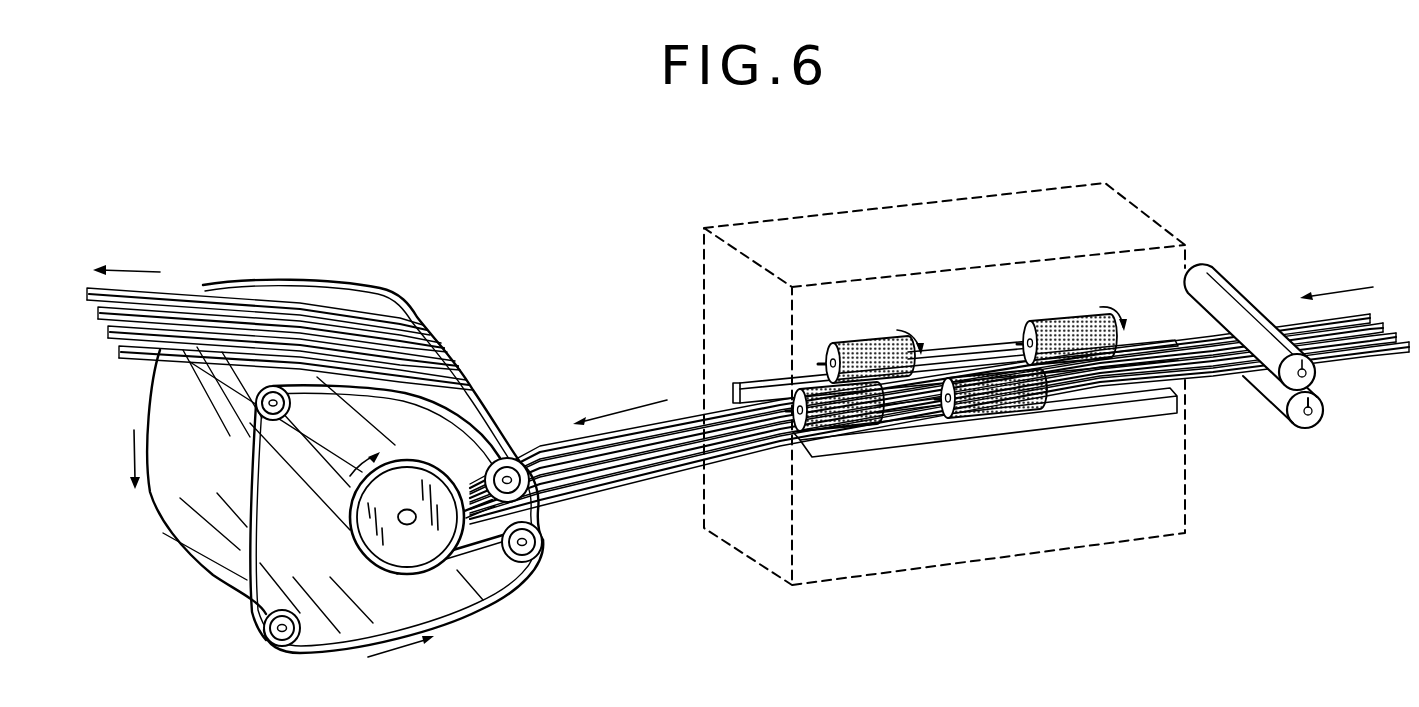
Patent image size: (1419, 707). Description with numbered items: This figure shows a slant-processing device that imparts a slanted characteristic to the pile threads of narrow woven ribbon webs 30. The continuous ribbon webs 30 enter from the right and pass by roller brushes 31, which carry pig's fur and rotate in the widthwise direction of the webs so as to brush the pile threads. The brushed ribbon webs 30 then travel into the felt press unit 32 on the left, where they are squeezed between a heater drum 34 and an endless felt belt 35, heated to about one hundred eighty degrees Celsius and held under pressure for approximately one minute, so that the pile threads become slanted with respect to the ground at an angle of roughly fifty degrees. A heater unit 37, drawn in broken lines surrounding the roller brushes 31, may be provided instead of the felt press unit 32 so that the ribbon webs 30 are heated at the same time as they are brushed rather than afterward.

The ribbon web 30 is at (621, 482).
The roller brushes 31 is at (870, 338).
The felt press unit 32 is at (333, 434).
The heater drum 34 is at (437, 535).
The endless felt belt 35 is at (463, 613).
The heater unit 37 is at (940, 570).